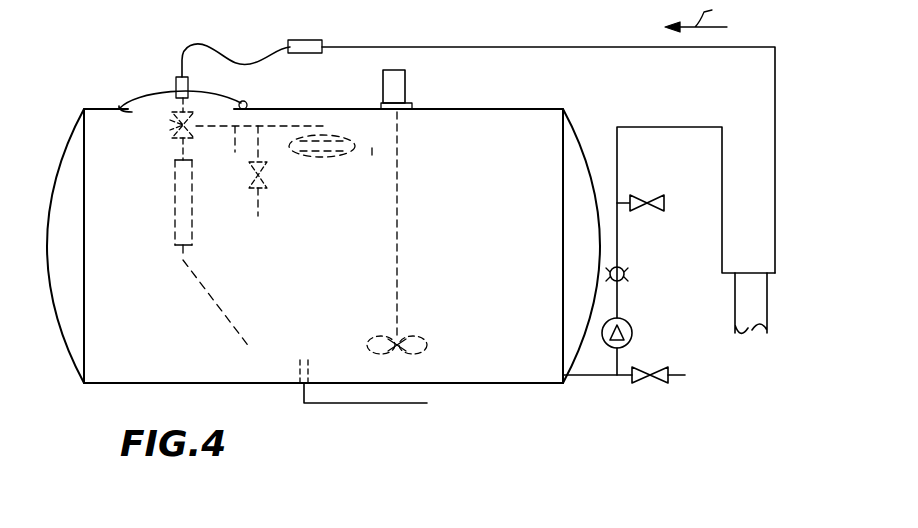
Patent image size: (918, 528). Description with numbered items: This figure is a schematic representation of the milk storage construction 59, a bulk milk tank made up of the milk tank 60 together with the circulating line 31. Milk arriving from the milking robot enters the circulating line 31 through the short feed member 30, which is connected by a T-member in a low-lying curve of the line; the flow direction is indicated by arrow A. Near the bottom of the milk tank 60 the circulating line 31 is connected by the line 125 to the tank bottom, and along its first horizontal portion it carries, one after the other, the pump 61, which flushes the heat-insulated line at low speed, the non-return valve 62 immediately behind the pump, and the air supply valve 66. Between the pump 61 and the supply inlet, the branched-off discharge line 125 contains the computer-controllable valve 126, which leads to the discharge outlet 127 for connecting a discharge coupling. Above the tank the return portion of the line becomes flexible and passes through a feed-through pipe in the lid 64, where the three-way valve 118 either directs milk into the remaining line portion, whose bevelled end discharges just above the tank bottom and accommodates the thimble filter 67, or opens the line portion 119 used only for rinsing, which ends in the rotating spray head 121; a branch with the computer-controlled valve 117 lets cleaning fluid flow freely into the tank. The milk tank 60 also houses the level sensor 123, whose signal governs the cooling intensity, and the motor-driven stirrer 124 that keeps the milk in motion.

The milk storage construction 59 is at (578, 129).
The milk tank 60 is at (509, 370).
The lid 64 is at (148, 93).
The circulating line 31 is at (637, 47).
The feed member 30 is at (722, 360).
The flow direction A is at (696, 16).
The air supply valve 66 is at (662, 195).
The non-return valve 62 is at (627, 276).
The pump 61 is at (632, 323).
The discharge line 125 is at (606, 378).
The valve 126 is at (652, 382).
The discharge outlet 127 is at (688, 372).
The stirrer 124 is at (405, 84).
The three-way valve 118 is at (158, 134).
The line portion 119 is at (260, 150).
The valve 117 is at (270, 192).
The spray head 121 is at (333, 162).
The thimble filter 67 is at (172, 228).
The level sensor 123 is at (300, 358).